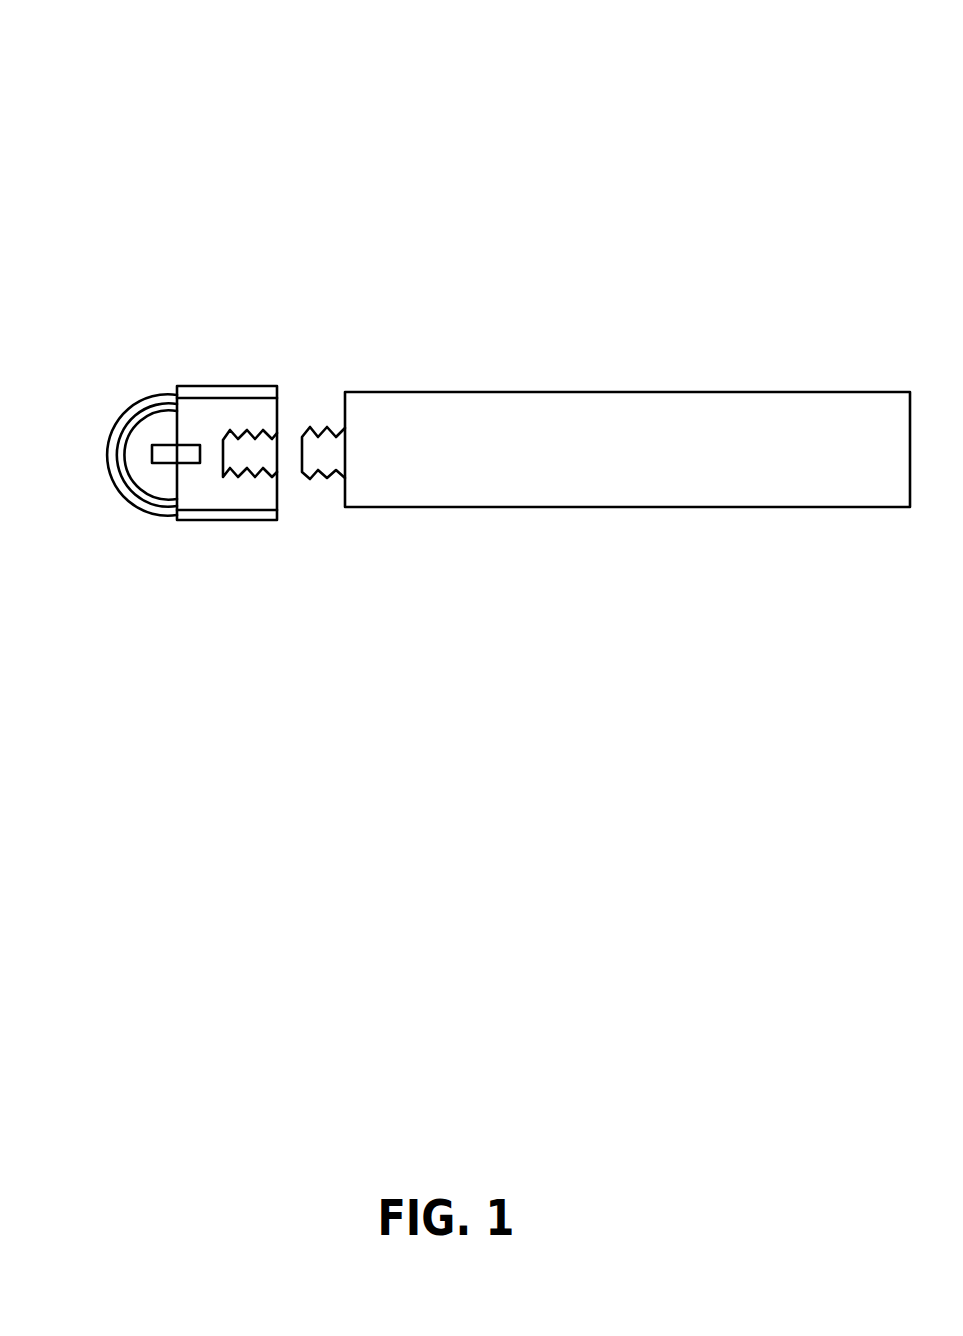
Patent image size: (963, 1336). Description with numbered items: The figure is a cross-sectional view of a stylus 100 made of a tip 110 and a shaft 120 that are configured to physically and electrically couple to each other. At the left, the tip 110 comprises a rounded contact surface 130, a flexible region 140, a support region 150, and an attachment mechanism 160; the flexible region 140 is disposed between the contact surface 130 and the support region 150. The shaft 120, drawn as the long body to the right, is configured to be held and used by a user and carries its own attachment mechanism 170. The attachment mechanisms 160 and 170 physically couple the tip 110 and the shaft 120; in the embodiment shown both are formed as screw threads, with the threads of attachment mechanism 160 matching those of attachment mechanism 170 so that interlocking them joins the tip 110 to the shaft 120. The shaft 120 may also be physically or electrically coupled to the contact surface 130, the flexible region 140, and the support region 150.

The stylus 100 is at (124, 119).
The tip 110 is at (159, 353).
The shaft 120 is at (520, 443).
The contact surface 130 is at (115, 482).
The flexible region 140 is at (153, 473).
The support region 150 is at (188, 453).
The attachment mechanism 160 is at (253, 493).
The attachment mechanism 170 is at (320, 455).